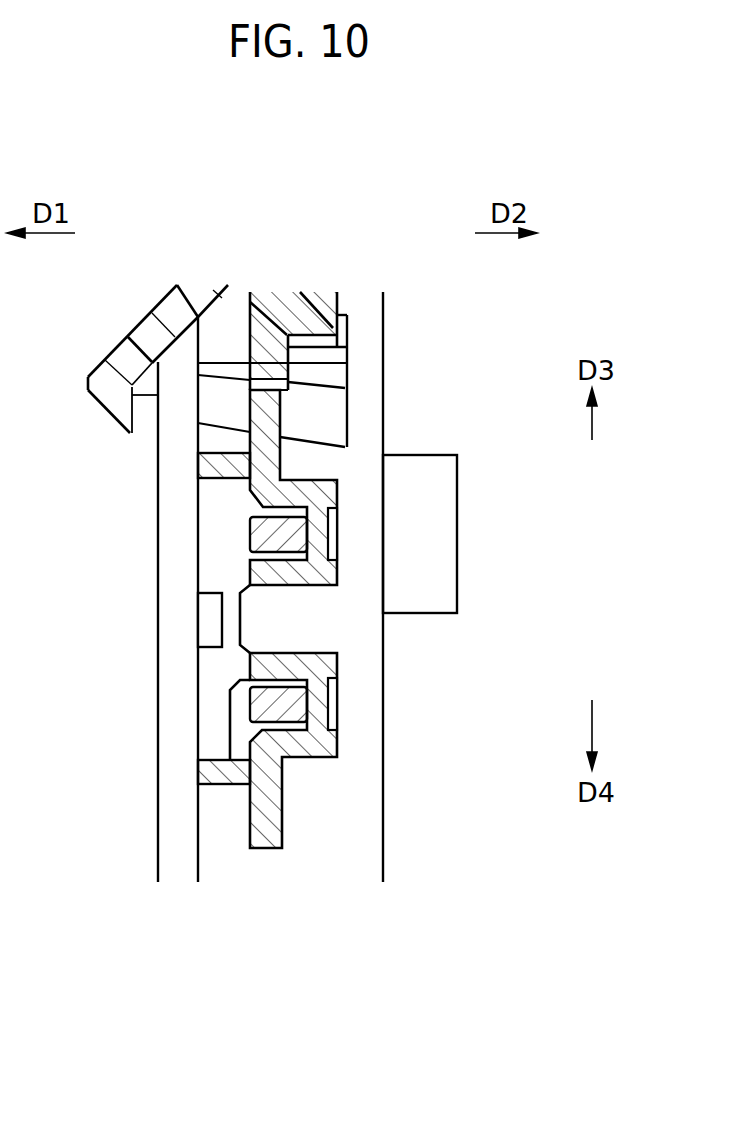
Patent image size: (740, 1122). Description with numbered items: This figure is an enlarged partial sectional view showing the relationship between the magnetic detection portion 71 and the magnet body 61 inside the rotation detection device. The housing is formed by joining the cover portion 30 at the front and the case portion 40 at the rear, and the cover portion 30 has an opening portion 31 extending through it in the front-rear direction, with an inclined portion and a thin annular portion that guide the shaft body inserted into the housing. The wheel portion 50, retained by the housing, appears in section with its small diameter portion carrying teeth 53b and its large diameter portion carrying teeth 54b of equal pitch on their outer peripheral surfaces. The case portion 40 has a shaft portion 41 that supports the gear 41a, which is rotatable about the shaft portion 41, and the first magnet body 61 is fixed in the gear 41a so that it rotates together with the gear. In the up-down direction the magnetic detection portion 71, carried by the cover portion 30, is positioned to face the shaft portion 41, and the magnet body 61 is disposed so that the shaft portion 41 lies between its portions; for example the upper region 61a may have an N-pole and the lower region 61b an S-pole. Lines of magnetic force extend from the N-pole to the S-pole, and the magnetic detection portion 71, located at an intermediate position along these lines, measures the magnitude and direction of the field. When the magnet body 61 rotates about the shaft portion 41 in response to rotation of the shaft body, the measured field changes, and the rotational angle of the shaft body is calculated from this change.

The cover portion 30 is at (168, 813).
The opening portion 31 is at (143, 333).
The case portion 40 is at (367, 795).
The shaft portion 41 is at (267, 607).
The gear 41a is at (312, 582).
The wheel portion 50 is at (287, 272).
The teeth 53b is at (312, 337).
The teeth 54b is at (263, 392).
The first magnet body 61 is at (158, 632).
The upper region 61a is at (262, 532).
The lower region 61b is at (257, 698).
The magnetic detection portion 71 is at (210, 630).